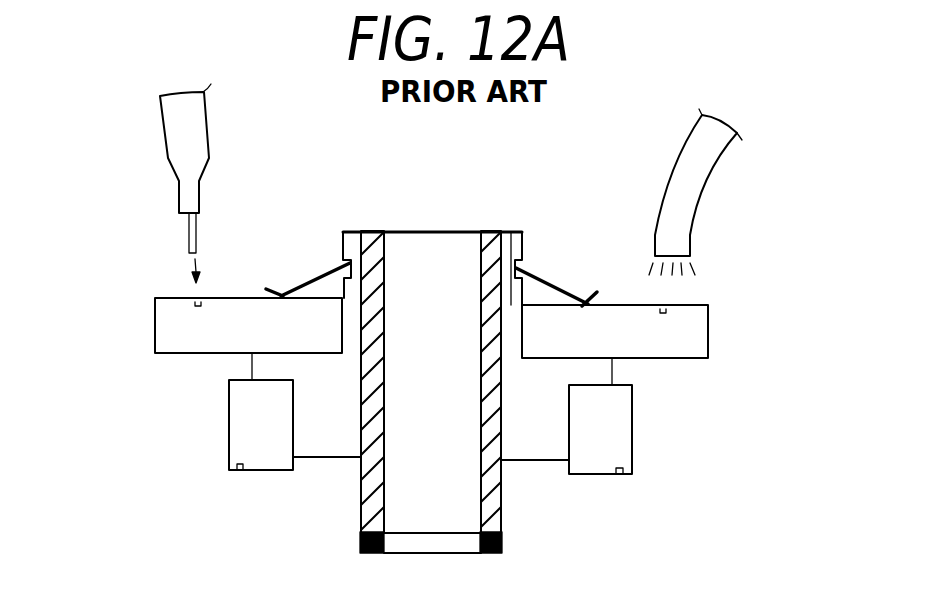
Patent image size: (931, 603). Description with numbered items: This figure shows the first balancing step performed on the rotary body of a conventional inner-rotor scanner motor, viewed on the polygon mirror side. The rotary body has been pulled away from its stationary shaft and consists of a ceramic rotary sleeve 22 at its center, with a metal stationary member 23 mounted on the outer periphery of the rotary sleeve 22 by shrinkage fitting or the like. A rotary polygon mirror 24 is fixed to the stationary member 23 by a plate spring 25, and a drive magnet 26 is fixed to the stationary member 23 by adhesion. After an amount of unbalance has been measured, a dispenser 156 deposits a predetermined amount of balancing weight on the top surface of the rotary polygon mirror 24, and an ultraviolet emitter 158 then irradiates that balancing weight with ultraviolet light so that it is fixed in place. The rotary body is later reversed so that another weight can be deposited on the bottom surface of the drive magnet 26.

The rotary sleeve 22 is at (488, 250).
The stationary member 23 is at (512, 238).
The rotary polygon mirror 24 is at (622, 318).
The plate spring 25 is at (542, 276).
The drive magnet 26 is at (612, 436).
The dispenser 156 is at (180, 140).
The ultraviolet emitter 158 is at (698, 160).